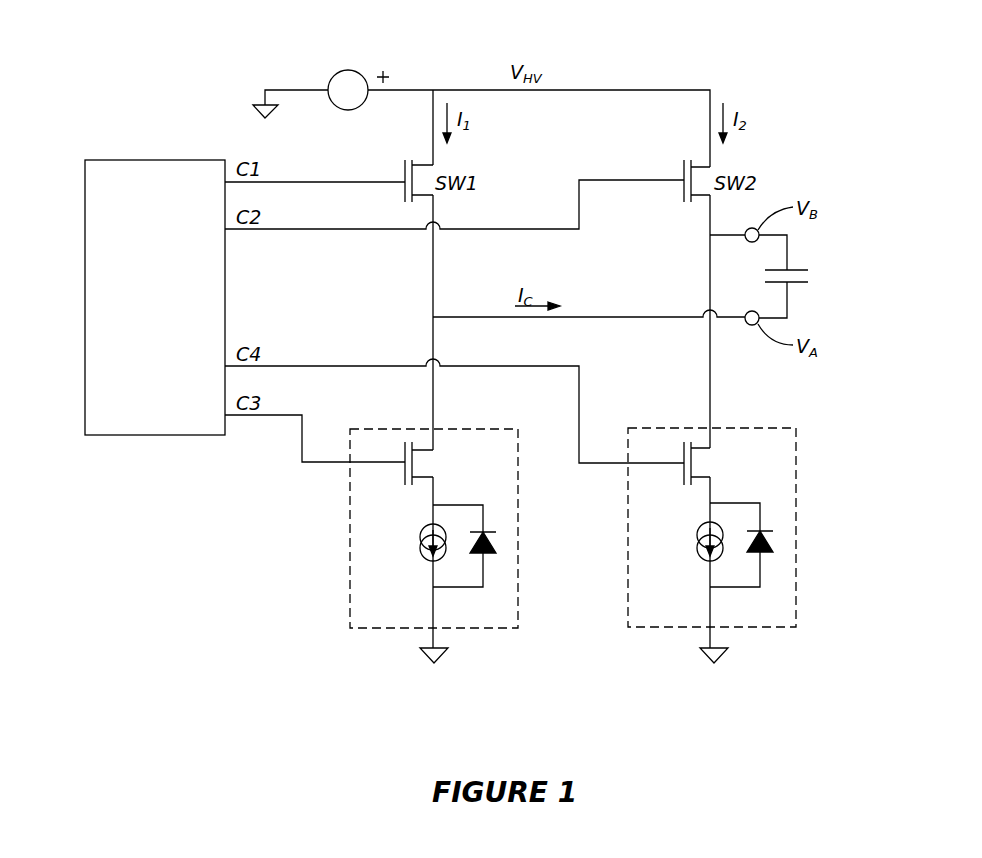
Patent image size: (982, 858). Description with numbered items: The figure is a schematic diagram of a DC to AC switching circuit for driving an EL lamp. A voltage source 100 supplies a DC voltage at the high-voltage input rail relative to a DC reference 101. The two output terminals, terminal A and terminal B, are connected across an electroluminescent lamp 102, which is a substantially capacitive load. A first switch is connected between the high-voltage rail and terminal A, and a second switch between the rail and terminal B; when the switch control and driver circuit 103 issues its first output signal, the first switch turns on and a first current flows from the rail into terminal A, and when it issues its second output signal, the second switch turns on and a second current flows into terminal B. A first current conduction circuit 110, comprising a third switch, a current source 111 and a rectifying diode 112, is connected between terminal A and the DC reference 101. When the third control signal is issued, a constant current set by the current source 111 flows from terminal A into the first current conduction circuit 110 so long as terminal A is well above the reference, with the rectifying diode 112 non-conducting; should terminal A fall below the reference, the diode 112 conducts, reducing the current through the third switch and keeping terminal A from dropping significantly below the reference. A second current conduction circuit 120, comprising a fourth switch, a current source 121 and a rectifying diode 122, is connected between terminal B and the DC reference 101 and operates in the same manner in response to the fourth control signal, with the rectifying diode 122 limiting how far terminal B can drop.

The voltage source 100 is at (340, 66).
The DC reference 101 is at (420, 655).
The electroluminescent lamp 102 is at (805, 265).
The switch control and driver circuit 103 is at (85, 222).
The first current conduction circuit 110 is at (350, 553).
The current source 111 is at (412, 545).
The rectifying diode 112 is at (490, 557).
The second current conduction circuit 120 is at (797, 550).
The current source 121 is at (692, 545).
The rectifying diode 122 is at (767, 556).